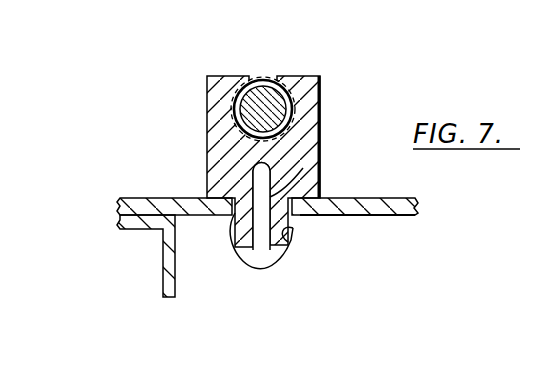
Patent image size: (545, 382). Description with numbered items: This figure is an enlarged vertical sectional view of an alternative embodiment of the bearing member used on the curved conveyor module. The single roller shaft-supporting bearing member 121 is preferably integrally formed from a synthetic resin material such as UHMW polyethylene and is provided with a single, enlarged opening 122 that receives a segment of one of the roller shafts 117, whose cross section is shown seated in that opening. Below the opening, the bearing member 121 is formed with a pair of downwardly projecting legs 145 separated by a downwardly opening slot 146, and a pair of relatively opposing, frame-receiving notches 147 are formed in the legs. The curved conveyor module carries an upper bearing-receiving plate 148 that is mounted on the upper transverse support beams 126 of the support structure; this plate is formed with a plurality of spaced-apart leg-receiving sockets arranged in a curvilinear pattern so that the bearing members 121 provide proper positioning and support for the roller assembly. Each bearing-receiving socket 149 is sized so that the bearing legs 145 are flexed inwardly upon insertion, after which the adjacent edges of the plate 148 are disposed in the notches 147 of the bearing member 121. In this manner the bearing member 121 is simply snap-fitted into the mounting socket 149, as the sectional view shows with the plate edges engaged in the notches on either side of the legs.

The roller shaft 117 is at (305, 100).
The single roller shaft-supporting bearing member 121 is at (212, 152).
The enlarged opening 122 is at (268, 76).
The upper transverse support beam 126 is at (172, 257).
The downwardly projecting legs 145 is at (266, 229).
The downwardly opening slot 146 is at (271, 184).
The frame-receiving notches 147 is at (222, 196).
The upper bearing-receiving plate 148 is at (370, 216).
The bearing-receiving socket 149 is at (295, 228).